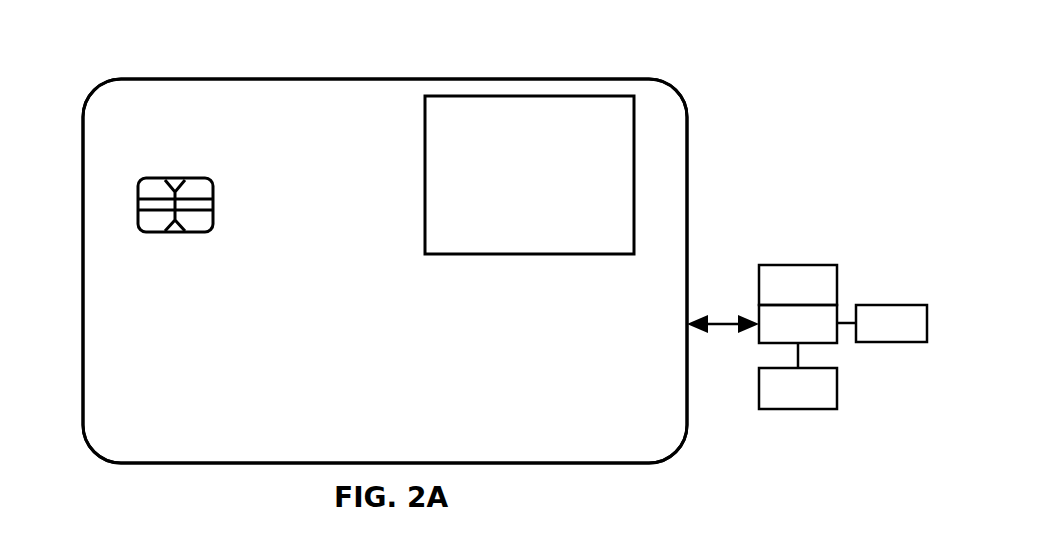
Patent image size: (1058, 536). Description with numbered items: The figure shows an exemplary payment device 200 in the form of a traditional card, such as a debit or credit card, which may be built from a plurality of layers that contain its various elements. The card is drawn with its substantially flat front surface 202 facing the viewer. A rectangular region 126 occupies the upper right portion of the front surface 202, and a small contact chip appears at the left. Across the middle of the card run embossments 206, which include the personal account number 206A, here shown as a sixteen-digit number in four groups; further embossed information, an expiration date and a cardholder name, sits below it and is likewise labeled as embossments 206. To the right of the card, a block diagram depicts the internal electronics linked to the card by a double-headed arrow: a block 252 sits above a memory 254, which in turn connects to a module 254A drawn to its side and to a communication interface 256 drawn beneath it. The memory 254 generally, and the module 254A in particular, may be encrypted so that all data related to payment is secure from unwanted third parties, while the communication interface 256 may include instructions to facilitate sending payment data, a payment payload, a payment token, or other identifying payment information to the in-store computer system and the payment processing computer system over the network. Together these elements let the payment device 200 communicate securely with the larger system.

The payment device 200 is at (183, 79).
The front surface 202 is at (668, 188).
The display 126 is at (622, 118).
The personal account number 206A is at (107, 318).
The embossments 206 is at (475, 419).
The processor / communication module 252 is at (798, 285).
The memory 254 is at (798, 324).
The module 254A is at (882, 323).
The communication interface 256 is at (798, 376).